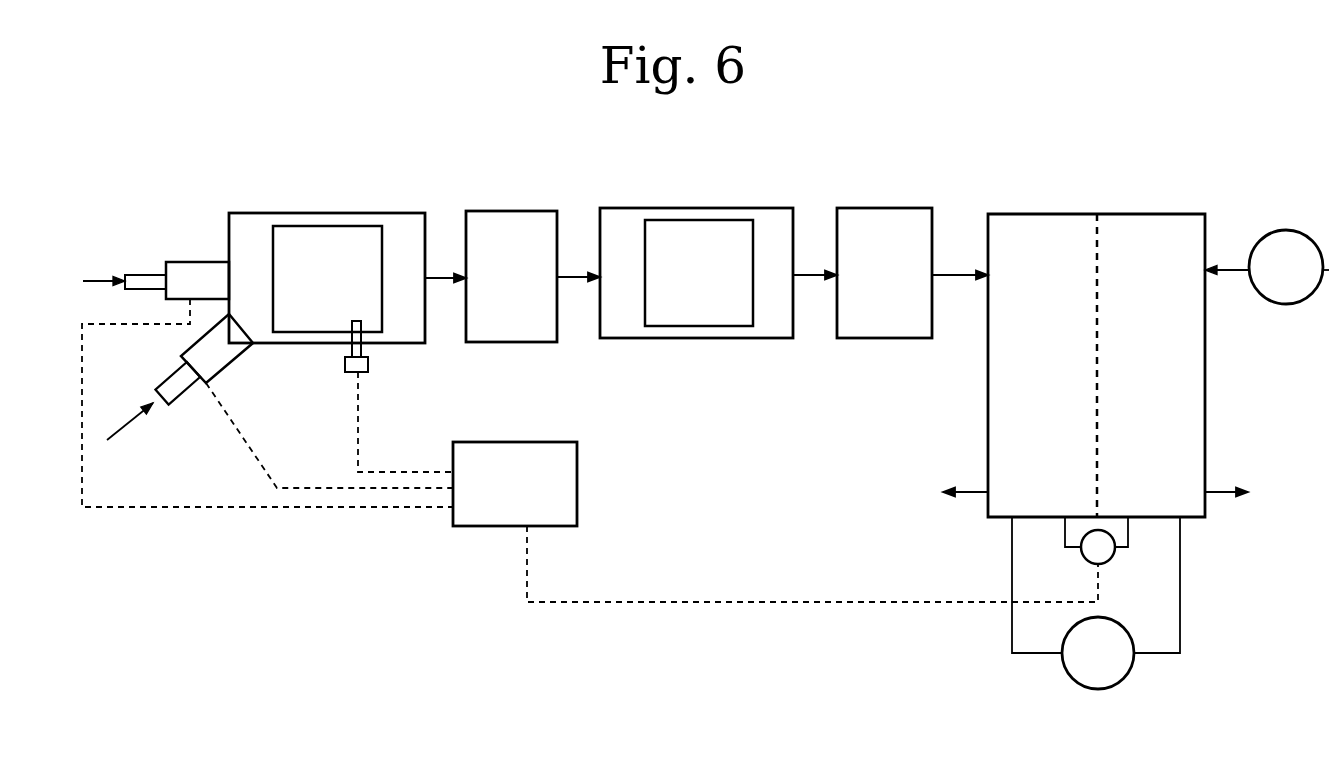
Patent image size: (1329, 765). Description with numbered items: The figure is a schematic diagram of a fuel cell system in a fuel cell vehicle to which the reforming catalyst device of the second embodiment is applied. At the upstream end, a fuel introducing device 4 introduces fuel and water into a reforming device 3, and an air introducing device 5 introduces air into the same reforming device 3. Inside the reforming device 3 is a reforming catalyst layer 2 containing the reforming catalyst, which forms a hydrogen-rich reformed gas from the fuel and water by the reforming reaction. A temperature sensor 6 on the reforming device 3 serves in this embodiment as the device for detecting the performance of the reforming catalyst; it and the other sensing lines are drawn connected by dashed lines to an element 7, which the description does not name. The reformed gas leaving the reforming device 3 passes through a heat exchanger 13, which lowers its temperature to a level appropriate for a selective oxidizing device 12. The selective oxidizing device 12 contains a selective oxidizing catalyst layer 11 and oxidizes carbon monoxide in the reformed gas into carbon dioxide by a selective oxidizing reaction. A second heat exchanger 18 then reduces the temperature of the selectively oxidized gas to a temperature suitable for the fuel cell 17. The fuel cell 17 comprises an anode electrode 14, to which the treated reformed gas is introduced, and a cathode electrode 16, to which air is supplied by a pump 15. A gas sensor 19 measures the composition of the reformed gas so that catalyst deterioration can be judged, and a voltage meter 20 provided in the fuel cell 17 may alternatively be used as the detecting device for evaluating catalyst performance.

The reforming catalyst layer 2 is at (328, 332).
The reforming device 3 is at (382, 343).
The fuel introducing device 4 is at (193, 261).
The air introducing device 5 is at (223, 370).
The temperature sensor 6 is at (365, 373).
The controller 7 is at (577, 455).
The selective oxidizing catalyst layer 11 is at (677, 326).
The selective oxidizing device 12 is at (715, 338).
The heat exchanger 13 is at (503, 342).
The anode electrode 14 is at (1030, 213).
The pump 15 is at (1292, 230).
The cathode electrode 16 is at (1143, 213).
The fuel cell 17 is at (1042, 132).
The heat exchanger 18 is at (898, 338).
The gas sensor 19 is at (1130, 628).
The voltage meter 20 is at (1093, 563).